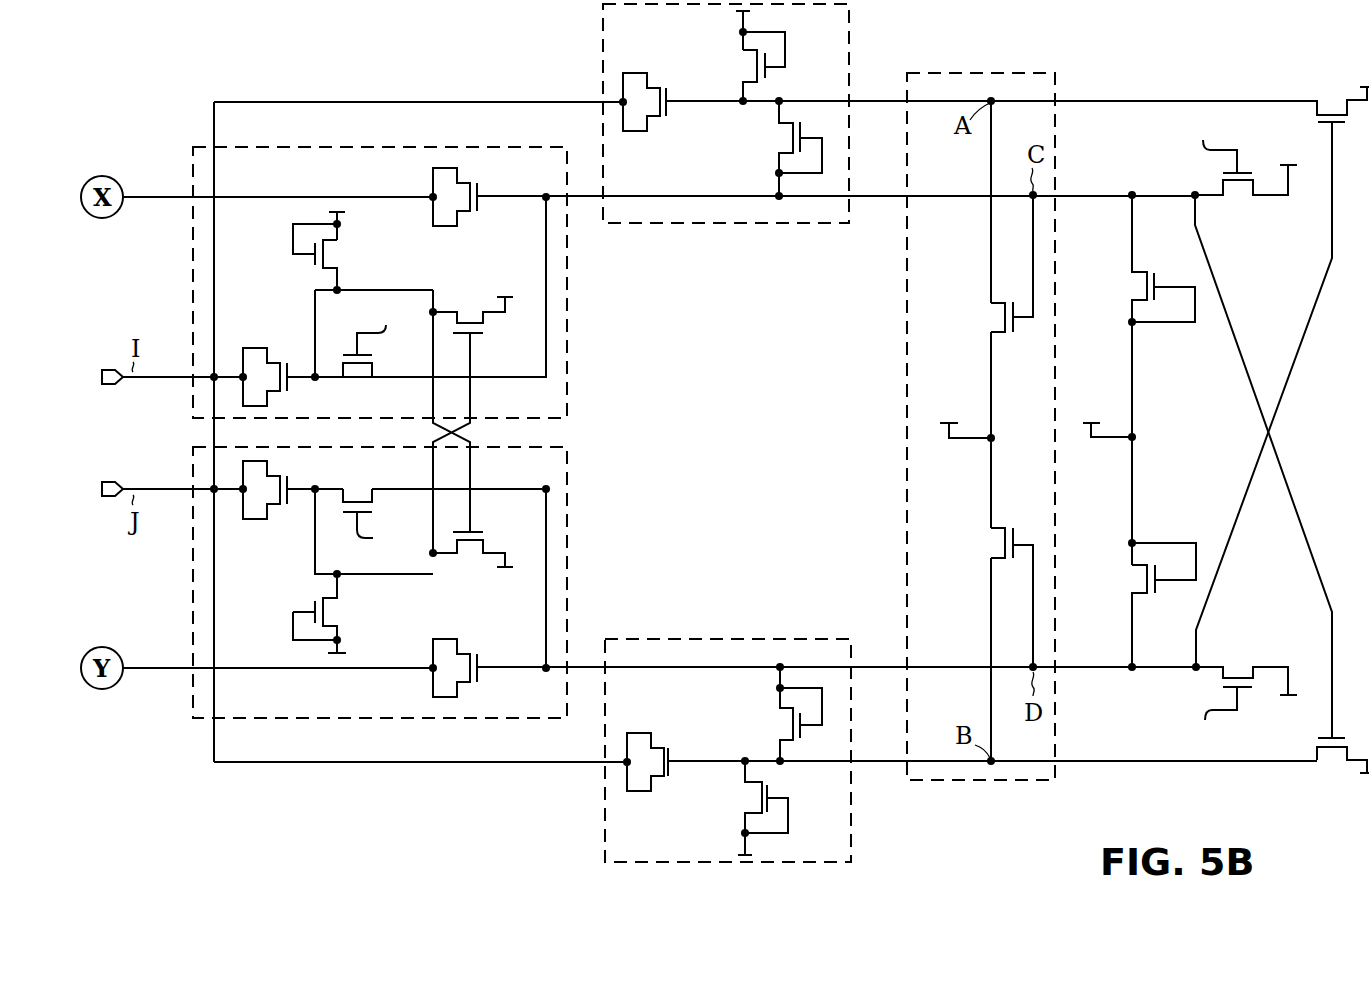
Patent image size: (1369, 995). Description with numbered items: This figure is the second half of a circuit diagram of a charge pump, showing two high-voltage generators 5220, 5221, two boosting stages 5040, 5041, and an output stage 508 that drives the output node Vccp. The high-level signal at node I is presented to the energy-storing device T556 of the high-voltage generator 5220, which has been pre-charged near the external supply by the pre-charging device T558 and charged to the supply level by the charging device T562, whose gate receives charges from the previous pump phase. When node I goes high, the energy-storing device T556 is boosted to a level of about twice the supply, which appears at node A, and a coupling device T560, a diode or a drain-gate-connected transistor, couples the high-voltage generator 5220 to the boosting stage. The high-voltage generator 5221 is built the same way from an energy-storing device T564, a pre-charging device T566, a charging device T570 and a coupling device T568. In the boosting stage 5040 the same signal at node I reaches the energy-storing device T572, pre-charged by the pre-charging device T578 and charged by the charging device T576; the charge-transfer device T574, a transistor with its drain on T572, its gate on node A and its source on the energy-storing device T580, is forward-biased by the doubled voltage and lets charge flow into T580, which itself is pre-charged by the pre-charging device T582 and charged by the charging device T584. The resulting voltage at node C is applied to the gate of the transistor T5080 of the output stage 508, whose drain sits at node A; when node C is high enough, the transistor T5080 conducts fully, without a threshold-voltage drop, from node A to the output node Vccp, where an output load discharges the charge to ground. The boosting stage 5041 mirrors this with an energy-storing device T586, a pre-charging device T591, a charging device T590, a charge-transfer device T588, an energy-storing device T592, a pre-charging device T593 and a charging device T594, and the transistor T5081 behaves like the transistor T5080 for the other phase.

The boosting stage 5040 is at (568, 320).
The boosting stage 5041 is at (568, 510).
The high-voltage generator 5220 is at (715, 228).
The high-voltage generator 5221 is at (715, 641).
The output stage 508 is at (985, 70).
The transistor T5080 is at (997, 318).
The transistor T5081 is at (997, 545).
The energy-storing device T556 is at (637, 135).
The pre-charging device T558 is at (743, 70).
The coupling device T560 is at (778, 138).
The charging device T562 is at (1332, 101).
The energy-storing device T564 is at (640, 728).
The pre-charging device T566 is at (745, 793).
The coupling device T568 is at (778, 720).
The charging device T570 is at (1332, 765).
The energy-storing device T572 is at (258, 345).
The charge-transfer device T574 is at (352, 380).
The charging device T576 is at (469, 310).
The pre-charging device T578 is at (340, 254).
The energy-storing device T580 is at (428, 178).
The pre-charging device T582 is at (1128, 290).
The charging device T584 is at (1238, 200).
The energy-storing device T586 is at (253, 524).
The charge-transfer device T588 is at (356, 496).
The charging device T590 is at (469, 556).
The pre-charging device T591 is at (340, 612).
The energy-storing device T592 is at (428, 688).
The pre-charging device T593 is at (1128, 580).
The charging device T594 is at (1238, 663).
The output node Vccp is at (960, 418).